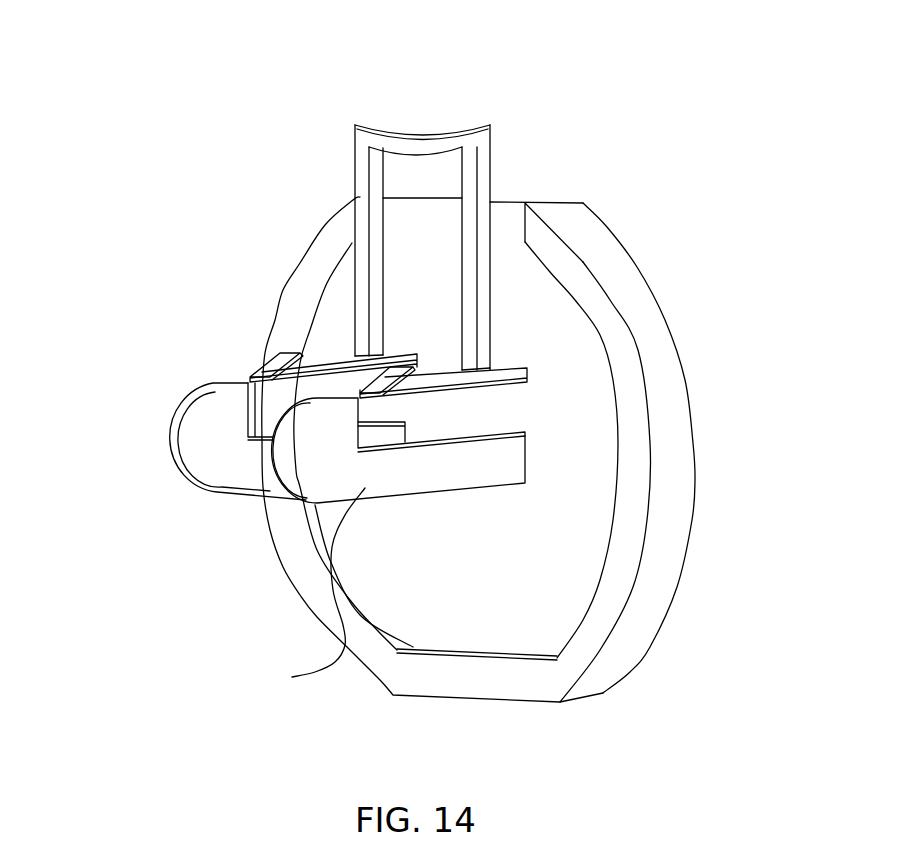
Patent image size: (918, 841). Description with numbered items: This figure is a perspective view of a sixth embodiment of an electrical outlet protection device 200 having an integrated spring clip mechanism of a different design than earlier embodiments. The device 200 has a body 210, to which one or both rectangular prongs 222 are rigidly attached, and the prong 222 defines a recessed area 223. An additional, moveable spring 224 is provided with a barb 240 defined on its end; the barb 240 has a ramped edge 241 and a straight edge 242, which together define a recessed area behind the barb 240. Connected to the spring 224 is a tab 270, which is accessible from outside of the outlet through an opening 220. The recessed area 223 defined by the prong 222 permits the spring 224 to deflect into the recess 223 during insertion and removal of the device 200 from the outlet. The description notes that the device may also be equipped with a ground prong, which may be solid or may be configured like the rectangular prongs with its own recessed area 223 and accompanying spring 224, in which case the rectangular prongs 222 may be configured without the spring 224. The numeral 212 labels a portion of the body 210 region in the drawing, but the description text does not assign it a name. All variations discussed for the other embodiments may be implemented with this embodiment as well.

The device 200 is at (624, 124).
The body 210 is at (654, 594).
The inner surface of ring 212 is at (590, 337).
The opening 220 is at (520, 203).
The rectangular prong 222 is at (304, 591).
The recessed area 223 is at (265, 410).
The spring 224 is at (405, 340).
The barb 240 is at (323, 294).
The ramped edge 241 is at (258, 376).
The straight edge 242 is at (263, 362).
The tab 270 is at (442, 125).